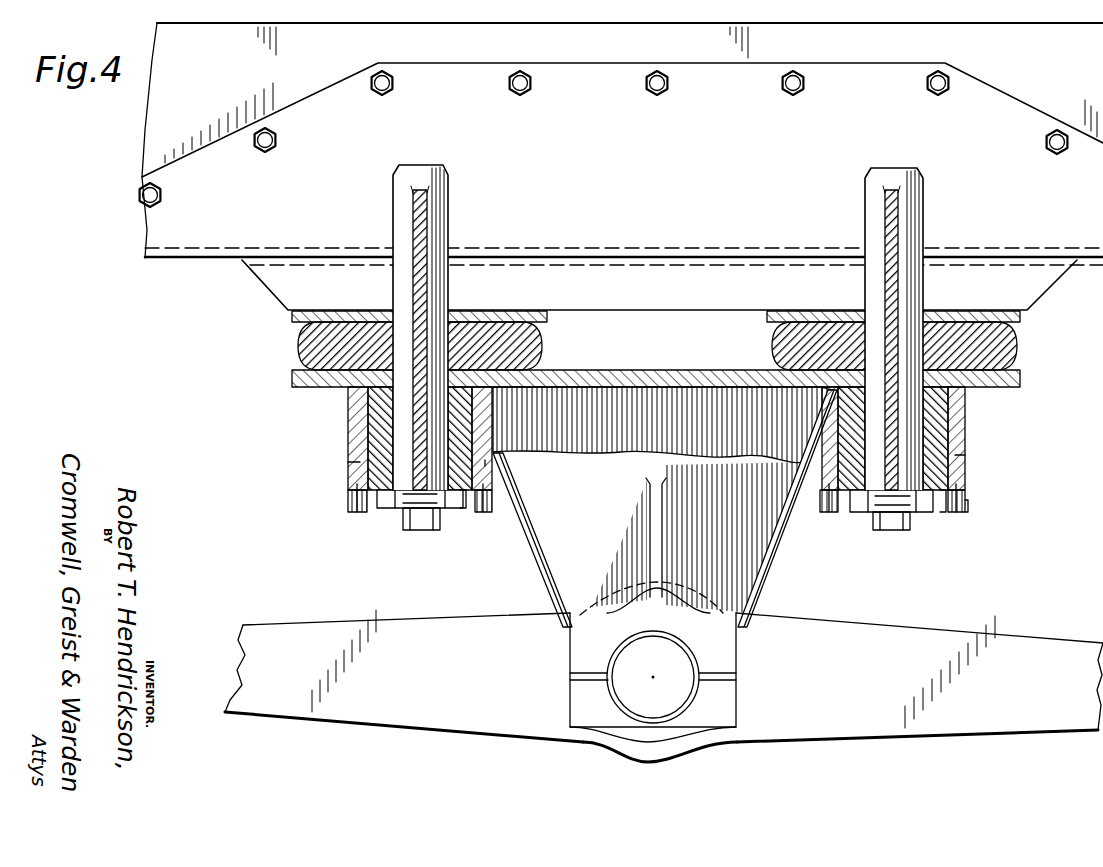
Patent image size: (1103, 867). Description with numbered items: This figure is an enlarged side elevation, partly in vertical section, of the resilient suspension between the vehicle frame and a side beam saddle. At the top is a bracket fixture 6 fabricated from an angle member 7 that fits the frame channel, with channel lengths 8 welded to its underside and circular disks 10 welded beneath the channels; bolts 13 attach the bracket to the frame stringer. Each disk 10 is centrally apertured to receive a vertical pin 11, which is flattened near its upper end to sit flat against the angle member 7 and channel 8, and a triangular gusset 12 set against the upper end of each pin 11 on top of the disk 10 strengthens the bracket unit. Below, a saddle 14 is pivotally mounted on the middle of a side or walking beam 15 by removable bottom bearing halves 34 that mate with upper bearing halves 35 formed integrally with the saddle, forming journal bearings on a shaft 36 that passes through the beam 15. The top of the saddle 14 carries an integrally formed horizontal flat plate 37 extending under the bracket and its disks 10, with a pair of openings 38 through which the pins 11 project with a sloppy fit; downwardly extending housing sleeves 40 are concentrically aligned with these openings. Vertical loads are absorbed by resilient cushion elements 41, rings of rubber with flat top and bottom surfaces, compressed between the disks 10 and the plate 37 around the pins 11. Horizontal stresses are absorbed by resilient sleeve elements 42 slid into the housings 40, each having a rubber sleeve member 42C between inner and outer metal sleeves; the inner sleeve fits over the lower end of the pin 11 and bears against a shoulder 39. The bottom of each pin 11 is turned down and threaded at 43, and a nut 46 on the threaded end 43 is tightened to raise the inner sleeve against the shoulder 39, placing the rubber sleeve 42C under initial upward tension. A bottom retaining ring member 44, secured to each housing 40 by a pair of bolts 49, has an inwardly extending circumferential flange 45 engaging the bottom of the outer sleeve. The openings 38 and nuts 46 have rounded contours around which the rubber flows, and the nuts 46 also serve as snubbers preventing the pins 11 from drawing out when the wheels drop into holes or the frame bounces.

The bracket fixture 6 is at (651, 156).
The angle member 7 is at (1012, 101).
The channel length 8 is at (672, 298).
The circular disk 10 is at (547, 316).
The vertical pin 11 is at (448, 216).
The triangular gusset 12 is at (413, 219).
The bolt 13 is at (507, 88).
The saddle 14 is at (782, 568).
The side or walking beam 15 is at (880, 738).
The removable bottom bearing half 34 is at (724, 730).
The upper bearing half 35 is at (736, 666).
The shaft 36 is at (650, 645).
The horizontal flat plate 37 is at (688, 386).
The opening 38 is at (483, 311).
The shoulder 39 is at (368, 416).
The housing sleeve 40 is at (348, 457).
The resilient cushion element 41 is at (298, 342).
The resilient sleeve element 42 is at (362, 464).
The rubber sleeve member 42C is at (485, 463).
The threaded end 43 is at (905, 531).
The bottom retaining ring member 44 is at (967, 505).
The inwardly extending circumferential flange 45 is at (463, 512).
The nut 46 is at (387, 512).
The bolt 49 is at (355, 514).